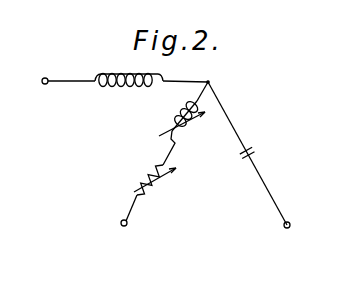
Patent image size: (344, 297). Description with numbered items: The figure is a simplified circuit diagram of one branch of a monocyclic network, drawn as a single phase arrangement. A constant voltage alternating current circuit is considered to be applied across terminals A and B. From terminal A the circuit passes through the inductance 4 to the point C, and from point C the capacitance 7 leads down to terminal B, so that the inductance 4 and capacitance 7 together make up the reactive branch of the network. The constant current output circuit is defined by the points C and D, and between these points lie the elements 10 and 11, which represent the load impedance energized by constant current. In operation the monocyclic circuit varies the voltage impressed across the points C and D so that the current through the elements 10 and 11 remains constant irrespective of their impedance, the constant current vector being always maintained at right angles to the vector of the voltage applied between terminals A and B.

The inductance 4 is at (125, 88).
The load impedance element 10 is at (190, 128).
The load impedance element 11 is at (158, 185).
The capacitance 7 is at (254, 148).
The terminal A is at (41, 81).
The terminal B is at (289, 233).
The point C is at (216, 79).
The point D is at (127, 223).